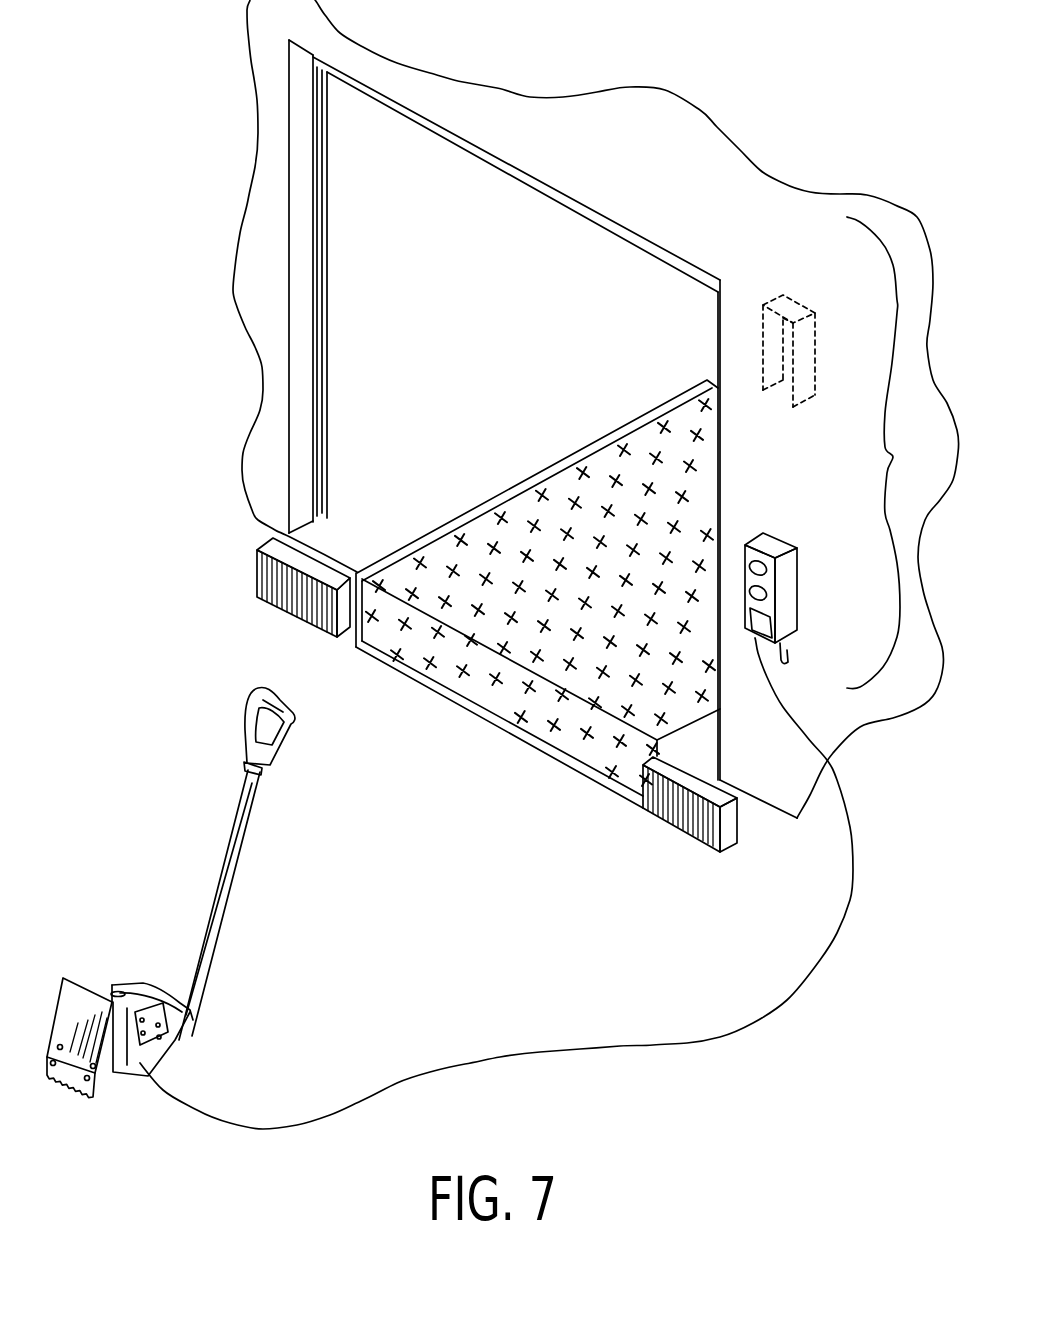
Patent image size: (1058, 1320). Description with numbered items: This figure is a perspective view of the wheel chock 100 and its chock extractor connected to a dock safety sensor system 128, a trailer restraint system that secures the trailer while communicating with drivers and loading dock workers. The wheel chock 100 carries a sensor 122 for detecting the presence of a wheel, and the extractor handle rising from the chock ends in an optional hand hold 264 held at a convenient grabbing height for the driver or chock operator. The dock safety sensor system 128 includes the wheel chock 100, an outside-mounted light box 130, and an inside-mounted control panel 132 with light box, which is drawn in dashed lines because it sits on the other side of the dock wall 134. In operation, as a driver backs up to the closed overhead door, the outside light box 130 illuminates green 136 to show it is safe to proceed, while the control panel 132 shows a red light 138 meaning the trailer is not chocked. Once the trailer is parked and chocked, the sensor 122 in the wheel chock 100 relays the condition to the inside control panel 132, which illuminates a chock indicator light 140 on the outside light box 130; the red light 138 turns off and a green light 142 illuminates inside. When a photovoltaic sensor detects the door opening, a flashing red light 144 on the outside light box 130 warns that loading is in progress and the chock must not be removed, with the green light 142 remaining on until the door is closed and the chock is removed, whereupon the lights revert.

The wheel chock 100 is at (204, 893).
The sensor 122 is at (115, 982).
The hand hold 264 is at (290, 722).
The dock safety sensor system 128 is at (893, 457).
The outside-mounted light box 130 is at (815, 573).
The inside-mounted control panel 132 is at (814, 343).
The dock wall 134 is at (682, 190).
The green light 136 is at (767, 572).
The red light 138 is at (808, 368).
The chock indicator light 140 is at (765, 625).
The green light 142 is at (812, 318).
The flashing red light 144 is at (767, 598).